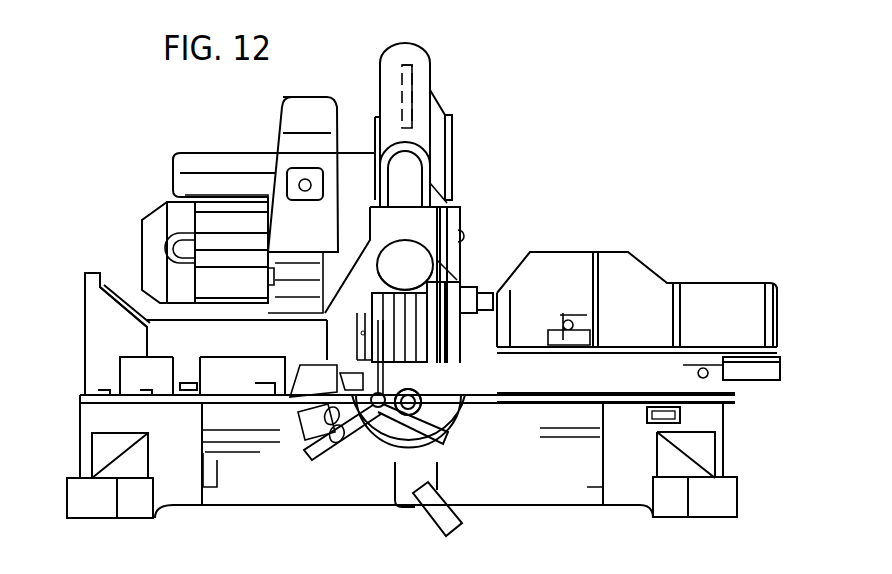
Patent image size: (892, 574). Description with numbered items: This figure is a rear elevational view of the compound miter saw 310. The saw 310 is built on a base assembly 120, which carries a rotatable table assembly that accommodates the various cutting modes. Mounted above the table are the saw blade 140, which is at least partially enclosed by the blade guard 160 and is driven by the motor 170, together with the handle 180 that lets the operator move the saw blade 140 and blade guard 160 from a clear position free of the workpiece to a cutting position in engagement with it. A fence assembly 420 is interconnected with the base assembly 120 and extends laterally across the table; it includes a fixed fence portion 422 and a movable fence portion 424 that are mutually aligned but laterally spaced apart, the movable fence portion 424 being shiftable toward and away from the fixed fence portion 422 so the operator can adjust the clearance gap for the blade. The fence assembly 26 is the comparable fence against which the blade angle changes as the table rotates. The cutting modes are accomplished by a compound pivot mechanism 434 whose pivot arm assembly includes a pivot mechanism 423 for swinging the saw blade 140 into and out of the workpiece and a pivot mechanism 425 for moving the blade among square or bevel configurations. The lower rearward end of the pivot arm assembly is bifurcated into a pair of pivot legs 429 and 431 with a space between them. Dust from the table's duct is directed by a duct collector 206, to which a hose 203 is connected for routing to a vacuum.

The base assembly 120 is at (710, 423).
The fence assembly 420 is at (80, 348).
The fixed fence portion 422 is at (100, 317).
The motor 170 is at (158, 212).
The handle 180 is at (205, 160).
The blade guard 160 is at (407, 50).
The saw blade 140 is at (412, 78).
The compound miter saw 310 is at (515, 185).
The pivot mechanism 423 is at (402, 295).
The pivot leg 429 is at (430, 320).
The pivot leg 431 is at (365, 323).
The movable fence portion 424 is at (732, 305).
The fence assembly 26 is at (703, 387).
The pivot mechanism 425 is at (397, 445).
The duct collector 206 is at (403, 490).
The hose 203 is at (437, 520).
The compound pivot mechanism 434 is at (435, 410).